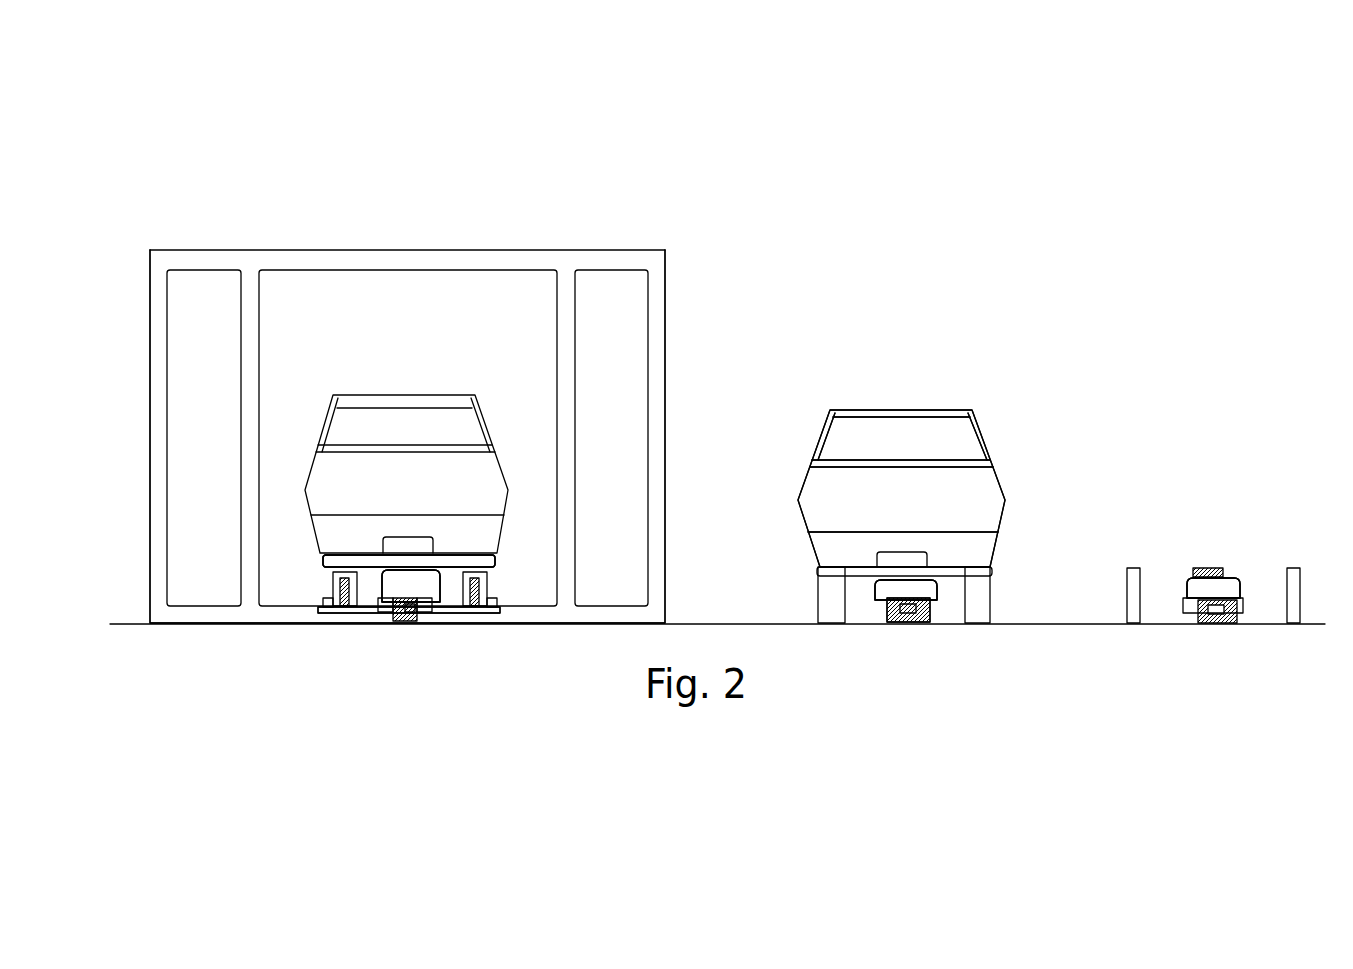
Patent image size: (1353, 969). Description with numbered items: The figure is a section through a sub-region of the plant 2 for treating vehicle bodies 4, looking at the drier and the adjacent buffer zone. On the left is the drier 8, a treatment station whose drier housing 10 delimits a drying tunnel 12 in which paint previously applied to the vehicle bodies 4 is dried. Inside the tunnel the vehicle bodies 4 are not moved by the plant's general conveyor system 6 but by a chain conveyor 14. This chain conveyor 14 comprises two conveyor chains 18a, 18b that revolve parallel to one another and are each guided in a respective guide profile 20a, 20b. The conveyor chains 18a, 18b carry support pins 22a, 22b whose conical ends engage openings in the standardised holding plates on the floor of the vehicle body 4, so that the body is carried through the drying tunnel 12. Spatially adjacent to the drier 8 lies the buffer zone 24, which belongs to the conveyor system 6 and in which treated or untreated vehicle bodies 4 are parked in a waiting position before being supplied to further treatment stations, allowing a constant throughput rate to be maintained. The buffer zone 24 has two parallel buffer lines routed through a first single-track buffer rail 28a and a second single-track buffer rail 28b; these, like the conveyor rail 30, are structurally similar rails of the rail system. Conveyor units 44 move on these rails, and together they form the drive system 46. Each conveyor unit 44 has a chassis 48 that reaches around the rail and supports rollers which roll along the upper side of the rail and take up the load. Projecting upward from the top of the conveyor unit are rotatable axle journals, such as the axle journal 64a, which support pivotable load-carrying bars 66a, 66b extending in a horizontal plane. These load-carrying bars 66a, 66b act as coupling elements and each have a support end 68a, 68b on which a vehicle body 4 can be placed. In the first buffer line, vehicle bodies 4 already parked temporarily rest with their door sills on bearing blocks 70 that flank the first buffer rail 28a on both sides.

The plant 2 is at (381, 112).
The vehicle body 4 is at (427, 394).
The conveyor system 6 is at (535, 115).
The drier 8 is at (475, 249).
The drier housing 10 is at (390, 250).
The drying tunnel 12 is at (259, 313).
The chain conveyor 14 is at (322, 583).
The conveyor chain 18a is at (341, 613).
The conveyor chain 18b is at (487, 610).
The guide profile 20a is at (318, 600).
The guide profile 20b is at (498, 609).
The support pin 22a is at (330, 573).
The support pin 22b is at (497, 572).
The buffer zone 24 is at (1068, 711).
The first single-track buffer rail 28a is at (903, 617).
The second single-track buffer rail 28b is at (1215, 617).
The conveyor rail 30 is at (402, 623).
The conveyor unit 44 is at (421, 582).
The drive system 46 is at (769, 266).
The chassis 48 is at (428, 622).
The axle journal 64a is at (360, 601).
The load-carrying bar 66a is at (358, 572).
The load-carrying bar 66b is at (430, 562).
The support end 68a is at (335, 563).
The support end 68b is at (493, 558).
The bearing block 70 is at (838, 605).